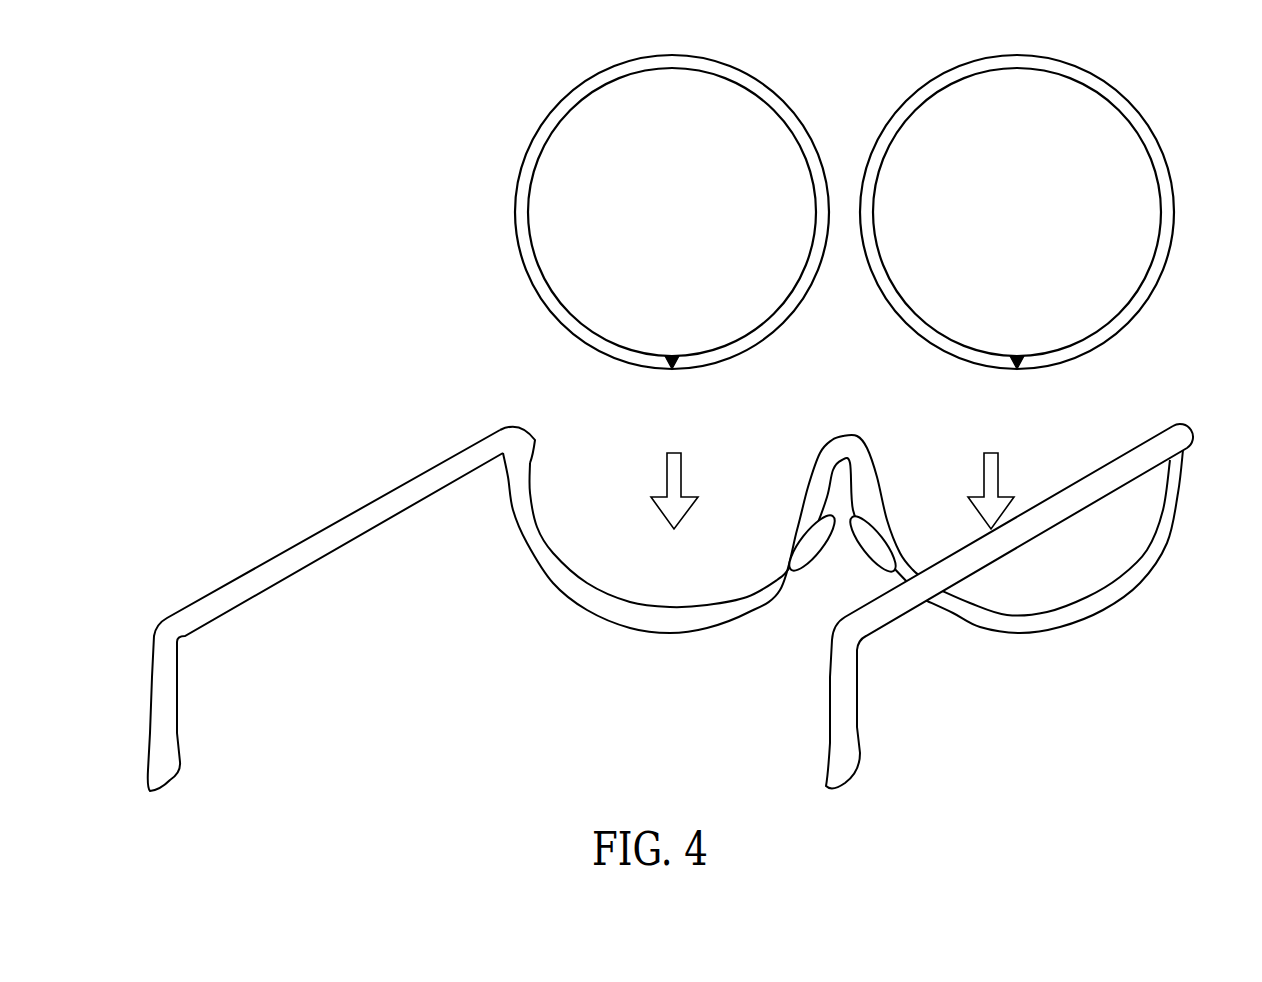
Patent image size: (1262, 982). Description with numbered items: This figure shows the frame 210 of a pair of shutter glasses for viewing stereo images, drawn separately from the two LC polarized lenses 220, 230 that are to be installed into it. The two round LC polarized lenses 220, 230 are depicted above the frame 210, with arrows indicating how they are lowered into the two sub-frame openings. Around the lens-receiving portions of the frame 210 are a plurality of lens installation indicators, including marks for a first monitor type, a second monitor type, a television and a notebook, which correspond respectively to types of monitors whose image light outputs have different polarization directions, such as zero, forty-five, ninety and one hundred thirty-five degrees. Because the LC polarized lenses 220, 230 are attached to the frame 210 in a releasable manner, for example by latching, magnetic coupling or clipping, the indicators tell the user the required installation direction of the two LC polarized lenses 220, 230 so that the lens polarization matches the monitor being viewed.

The frame 210 is at (265, 575).
The LC polarized lens 220 is at (577, 145).
The LC polarized lens 230 is at (1120, 140).